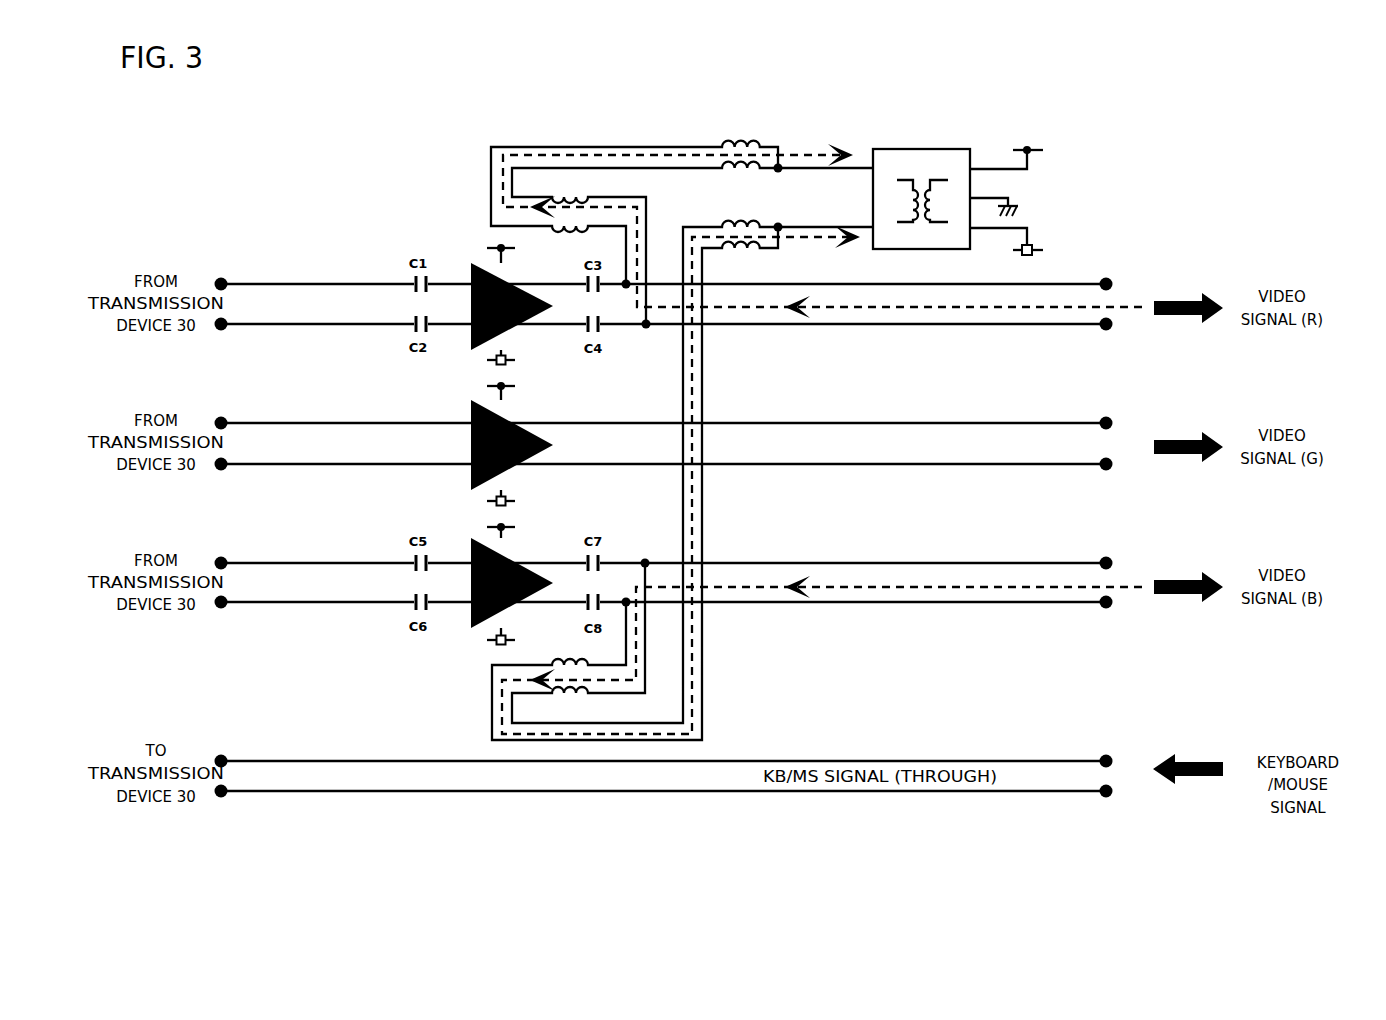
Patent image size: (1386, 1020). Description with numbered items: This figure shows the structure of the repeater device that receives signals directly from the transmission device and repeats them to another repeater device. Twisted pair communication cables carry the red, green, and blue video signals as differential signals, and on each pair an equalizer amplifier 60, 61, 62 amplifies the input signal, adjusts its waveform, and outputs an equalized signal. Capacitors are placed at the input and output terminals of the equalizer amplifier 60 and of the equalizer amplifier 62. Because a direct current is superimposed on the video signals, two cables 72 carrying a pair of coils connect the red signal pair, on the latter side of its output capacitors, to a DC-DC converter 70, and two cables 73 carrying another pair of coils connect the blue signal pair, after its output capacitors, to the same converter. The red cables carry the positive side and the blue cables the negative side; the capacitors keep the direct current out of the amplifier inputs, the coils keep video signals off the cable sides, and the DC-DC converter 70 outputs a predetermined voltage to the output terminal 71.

The equalizer amplifier 60 is at (477, 262).
The equalizer amplifier 61 is at (512, 424).
The equalizer amplifier 62 is at (512, 560).
The DC-DC converter 70 is at (968, 149).
The output terminal 71 is at (1066, 172).
The cables 72 is at (632, 147).
The cables 73 is at (683, 413).